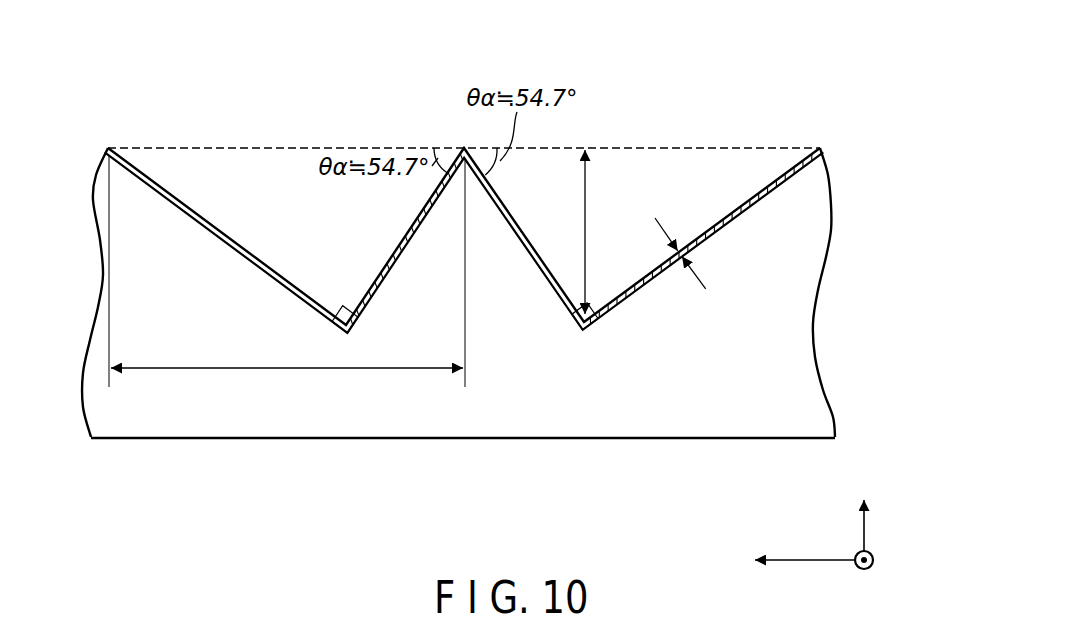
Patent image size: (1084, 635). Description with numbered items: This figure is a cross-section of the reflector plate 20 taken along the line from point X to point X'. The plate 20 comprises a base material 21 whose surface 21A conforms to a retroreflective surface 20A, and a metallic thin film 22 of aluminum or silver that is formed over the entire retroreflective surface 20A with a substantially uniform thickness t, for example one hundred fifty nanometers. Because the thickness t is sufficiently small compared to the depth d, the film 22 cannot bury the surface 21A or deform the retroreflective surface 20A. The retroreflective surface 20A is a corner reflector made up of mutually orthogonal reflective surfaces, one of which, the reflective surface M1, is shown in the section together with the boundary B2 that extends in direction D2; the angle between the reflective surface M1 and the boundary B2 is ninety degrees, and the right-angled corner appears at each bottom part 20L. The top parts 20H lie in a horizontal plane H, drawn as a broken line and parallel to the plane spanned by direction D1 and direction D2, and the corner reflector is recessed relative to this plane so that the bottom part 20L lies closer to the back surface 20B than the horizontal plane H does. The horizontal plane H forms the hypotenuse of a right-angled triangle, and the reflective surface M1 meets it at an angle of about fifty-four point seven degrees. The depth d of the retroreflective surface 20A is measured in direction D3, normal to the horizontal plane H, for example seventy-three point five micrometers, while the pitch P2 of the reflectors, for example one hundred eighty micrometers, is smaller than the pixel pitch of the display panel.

The reflector plate 20 is at (850, 277).
The retroreflective surface 20A is at (758, 183).
The back surface 20B is at (643, 441).
The top part 20H is at (111, 145).
The bottom part 20L is at (350, 329).
The base material 21 is at (813, 388).
The surface of the base material 21A is at (715, 223).
The metallic thin film 22 is at (792, 173).
The horizontal plane H is at (258, 145).
The point X of section line X-X' X is at (89, 137).
The point X' of section line X- X' is at (843, 133).
The boundary B2 is at (243, 241).
The reflective surface M1 is at (373, 264).
The depth d is at (594, 232).
The thickness t is at (676, 272).
The pitch P2 is at (287, 277).
The direction D1 is at (881, 572).
The direction D2 is at (786, 560).
The direction D3 is at (866, 509).